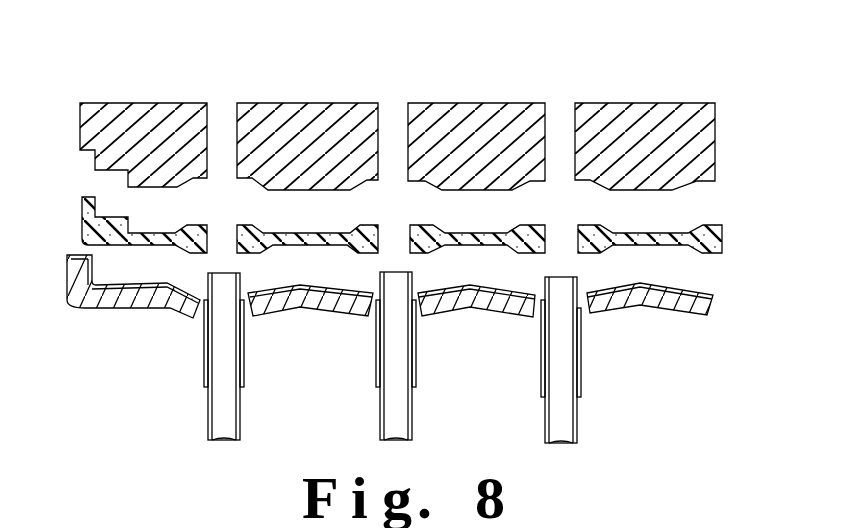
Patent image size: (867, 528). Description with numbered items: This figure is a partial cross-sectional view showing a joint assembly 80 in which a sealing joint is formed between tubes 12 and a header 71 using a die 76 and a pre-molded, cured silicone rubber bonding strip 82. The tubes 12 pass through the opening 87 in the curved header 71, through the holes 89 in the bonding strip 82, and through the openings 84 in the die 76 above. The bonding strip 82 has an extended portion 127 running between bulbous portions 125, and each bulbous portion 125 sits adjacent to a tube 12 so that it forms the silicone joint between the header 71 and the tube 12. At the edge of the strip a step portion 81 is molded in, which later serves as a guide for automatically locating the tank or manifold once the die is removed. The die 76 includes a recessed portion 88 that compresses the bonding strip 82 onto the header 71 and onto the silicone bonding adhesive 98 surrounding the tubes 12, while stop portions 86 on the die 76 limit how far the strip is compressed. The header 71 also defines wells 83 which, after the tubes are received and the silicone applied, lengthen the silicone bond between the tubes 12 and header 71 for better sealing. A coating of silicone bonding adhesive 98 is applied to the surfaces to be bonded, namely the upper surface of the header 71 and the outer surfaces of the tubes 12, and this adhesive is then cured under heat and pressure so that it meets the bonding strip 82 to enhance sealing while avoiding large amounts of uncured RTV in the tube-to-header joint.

The joint assembly 80 is at (623, 76).
The die 76 is at (717, 111).
The openings in the die 84 is at (560, 110).
The stop portion 86 is at (678, 199).
The recessed portion 88 is at (605, 188).
The step portion 81 is at (80, 214).
The bonding strip 82 is at (723, 232).
The holes in the bonding strip 89 is at (222, 242).
The extended portion 127 is at (297, 232).
The bulbous portion 125 is at (535, 248).
The header 71 is at (63, 310).
The silicone bonding adhesive coating 98 is at (386, 357).
The tubes 12 is at (223, 398).
The wells 83 is at (541, 306).
The opening in the header 87 is at (582, 303).